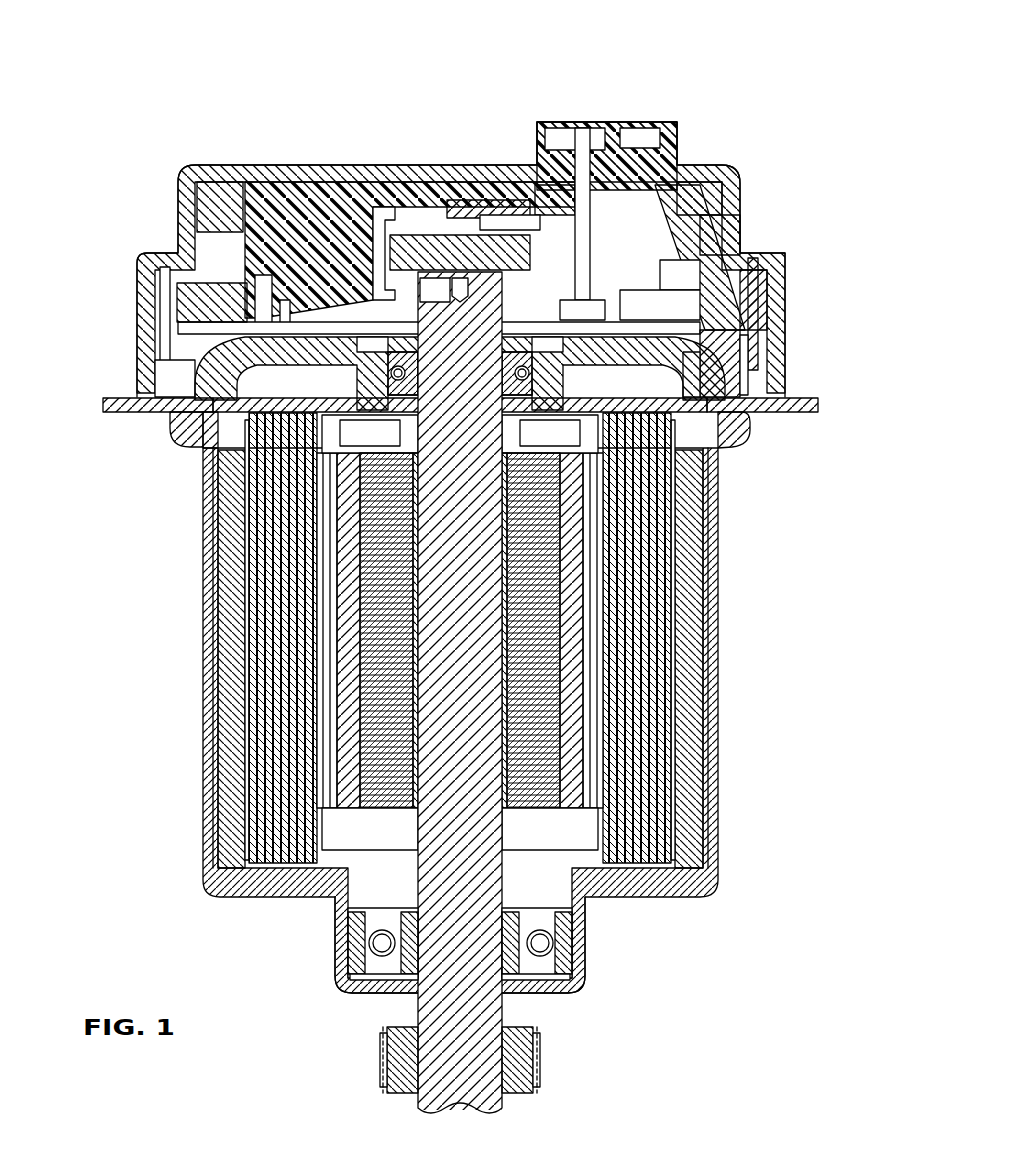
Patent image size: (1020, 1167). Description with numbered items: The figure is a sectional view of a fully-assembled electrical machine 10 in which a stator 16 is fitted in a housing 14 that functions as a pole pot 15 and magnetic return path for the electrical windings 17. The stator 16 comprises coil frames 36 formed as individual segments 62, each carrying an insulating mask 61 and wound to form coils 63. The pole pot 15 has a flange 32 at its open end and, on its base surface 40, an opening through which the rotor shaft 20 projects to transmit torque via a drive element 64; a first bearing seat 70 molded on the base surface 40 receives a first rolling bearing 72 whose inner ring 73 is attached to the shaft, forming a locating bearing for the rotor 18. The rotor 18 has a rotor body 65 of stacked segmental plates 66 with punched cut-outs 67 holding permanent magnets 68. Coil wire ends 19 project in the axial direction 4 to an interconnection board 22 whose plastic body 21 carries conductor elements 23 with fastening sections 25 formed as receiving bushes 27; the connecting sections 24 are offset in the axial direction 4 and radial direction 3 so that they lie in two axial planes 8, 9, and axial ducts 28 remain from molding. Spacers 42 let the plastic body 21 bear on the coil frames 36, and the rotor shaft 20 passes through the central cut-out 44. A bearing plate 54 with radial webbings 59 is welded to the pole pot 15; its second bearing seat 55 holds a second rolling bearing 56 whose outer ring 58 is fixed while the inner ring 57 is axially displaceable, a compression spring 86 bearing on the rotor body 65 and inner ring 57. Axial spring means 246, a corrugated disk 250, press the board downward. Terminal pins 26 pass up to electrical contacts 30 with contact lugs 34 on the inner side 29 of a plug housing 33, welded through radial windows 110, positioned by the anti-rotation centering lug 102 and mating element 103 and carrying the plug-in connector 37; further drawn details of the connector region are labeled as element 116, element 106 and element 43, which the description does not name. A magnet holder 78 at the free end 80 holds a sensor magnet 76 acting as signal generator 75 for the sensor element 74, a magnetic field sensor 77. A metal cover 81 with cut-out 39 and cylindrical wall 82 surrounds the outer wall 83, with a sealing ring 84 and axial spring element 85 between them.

The electrical machine 10 is at (150, 150).
The metal cover 81 is at (208, 168).
The cut-out 39 is at (262, 200).
The mating element 103 is at (266, 275).
The second centering lug 102 is at (284, 300).
The conductor elements 23 is at (439, 220).
The connecting sections 24 is at (338, 322).
The plug housing 33 is at (378, 245).
The magnet holder 78 is at (395, 250).
The axial direction 4 is at (461, 56).
The signal generator 75 is at (466, 162).
The sensor magnet 76 is at (455, 208).
The sensor element 74 is at (516, 115).
The magnetic field sensor 77 is at (530, 200).
The inner side 29 is at (500, 220).
The plug opening 116 is at (582, 130).
The plug pin 106 is at (583, 230).
The plug-in connector 37 is at (612, 160).
The axial spring means 246 is at (667, 97).
The corrugated disk 250 is at (640, 135).
The plug wall 43 is at (665, 150).
The radial direction 3 is at (770, 95).
The radial outer wall 83 is at (700, 190).
The sealing ring 84 is at (740, 230).
The electrical contacts 30 is at (764, 207).
The contact lugs 34 is at (745, 245).
The radial windows 110 is at (700, 270).
The terminal pin 26 is at (660, 300).
The axial spring element 85 is at (758, 295).
The coil wire ends 19 is at (740, 330).
The fastening sections 25 is at (794, 359).
The receiving bushes 27 is at (748, 342).
The bearing plate 54 is at (765, 374).
The radial webbings 59 is at (735, 372).
The flange 32 is at (800, 412).
The axial ducts 28 is at (722, 445).
The insulating mask 61 is at (716, 455).
The electrical windings 17 is at (511, 659).
The coils 63 is at (690, 618).
The stator 16 is at (712, 640).
The pole pot 15 is at (690, 668).
The rotor 18 is at (540, 690).
The coil frames 36 is at (690, 760).
The individual segments 62 is at (509, 638).
The base surface 40 is at (640, 898).
The first rolling bearing 72 is at (547, 943).
The first bearing seat 70 is at (355, 943).
The inner ring 73 is at (352, 976).
The drive element 64 is at (400, 1058).
The rotor body 65 is at (360, 630).
The segmental plates 66 is at (315, 748).
The cut-outs 67 is at (345, 712).
The permanent magnets 68 is at (345, 665).
The rotor shaft 20 is at (455, 625).
The housing 14 is at (204, 572).
The spacers 42 is at (215, 462).
The axial plane 8 is at (140, 398).
The axial plane 9 is at (150, 360).
The plastic body 21 is at (159, 314).
The interconnection board 22 is at (180, 345).
The cylindrical wall 82 is at (158, 300).
The inner ring 57 is at (372, 365).
The second rolling bearing 56 is at (408, 373).
The outer ring 58 is at (392, 390).
The second bearing seat 55 is at (380, 440).
The central cut-out 44 is at (385, 470).
The compression spring 86 is at (417, 480).
The free end 80 is at (444, 291).